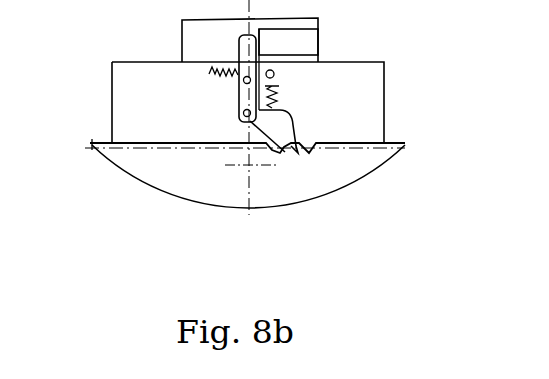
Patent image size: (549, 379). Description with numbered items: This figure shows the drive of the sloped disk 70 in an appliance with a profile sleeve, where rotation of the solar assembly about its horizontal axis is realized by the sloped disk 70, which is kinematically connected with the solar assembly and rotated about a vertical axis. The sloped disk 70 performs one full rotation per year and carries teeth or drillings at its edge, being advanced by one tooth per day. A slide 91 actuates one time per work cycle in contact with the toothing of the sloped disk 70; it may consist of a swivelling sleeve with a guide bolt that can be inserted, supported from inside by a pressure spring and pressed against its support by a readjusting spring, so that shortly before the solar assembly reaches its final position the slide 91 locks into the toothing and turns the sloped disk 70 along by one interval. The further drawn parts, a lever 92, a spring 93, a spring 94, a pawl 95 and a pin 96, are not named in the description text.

The sloped disk 70 is at (300, 182).
The slide 91 is at (287, 40).
The lever 92 is at (237, 43).
The spring 93 is at (212, 78).
The spring 94 is at (280, 97).
The pawl 95 is at (277, 125).
The pin 96 is at (274, 74).